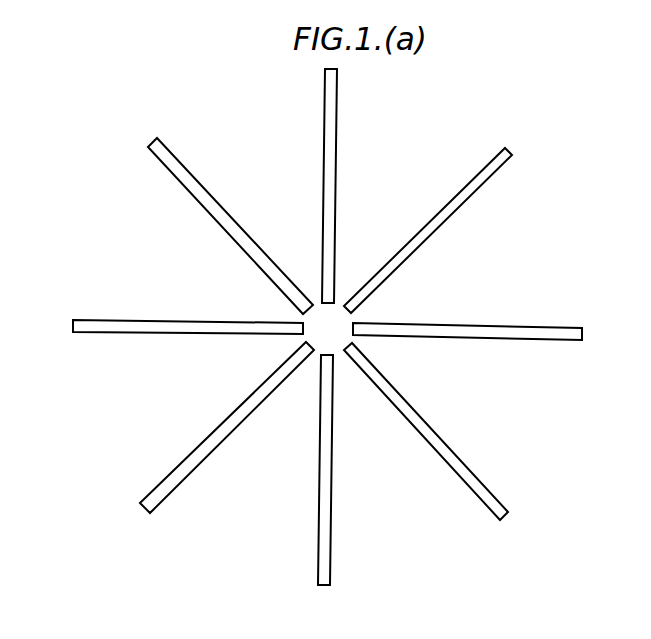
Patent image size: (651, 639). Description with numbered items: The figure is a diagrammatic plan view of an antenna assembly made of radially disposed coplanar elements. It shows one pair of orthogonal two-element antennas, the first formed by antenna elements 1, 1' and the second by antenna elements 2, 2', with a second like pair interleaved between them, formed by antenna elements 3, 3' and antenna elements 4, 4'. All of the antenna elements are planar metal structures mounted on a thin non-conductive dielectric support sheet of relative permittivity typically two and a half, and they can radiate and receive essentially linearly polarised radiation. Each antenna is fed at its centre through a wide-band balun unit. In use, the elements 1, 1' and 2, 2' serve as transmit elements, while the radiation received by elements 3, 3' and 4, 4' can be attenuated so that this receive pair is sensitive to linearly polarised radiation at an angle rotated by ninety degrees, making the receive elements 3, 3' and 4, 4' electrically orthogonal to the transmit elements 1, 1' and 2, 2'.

The antenna element 1 is at (342, 180).
The antenna element 1' is at (339, 478).
The antenna element 2 is at (479, 334).
The antenna element 2' is at (172, 319).
The antenna element 3 is at (439, 230).
The antenna element 3' is at (209, 430).
The antenna element 4 is at (436, 444).
The antenna element 4' is at (212, 226).